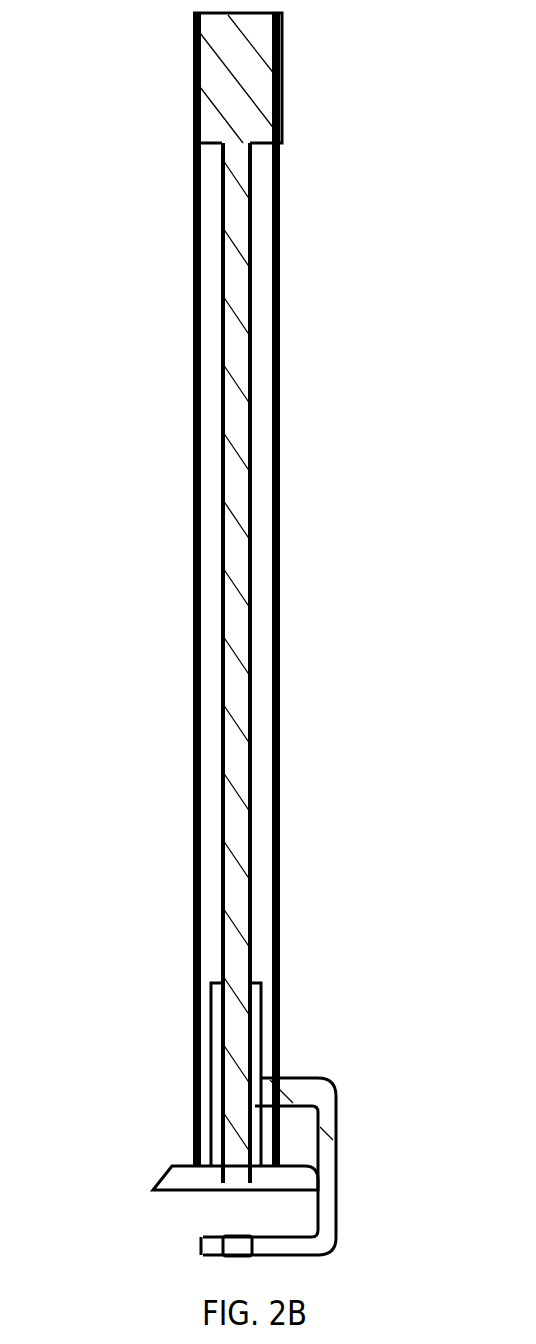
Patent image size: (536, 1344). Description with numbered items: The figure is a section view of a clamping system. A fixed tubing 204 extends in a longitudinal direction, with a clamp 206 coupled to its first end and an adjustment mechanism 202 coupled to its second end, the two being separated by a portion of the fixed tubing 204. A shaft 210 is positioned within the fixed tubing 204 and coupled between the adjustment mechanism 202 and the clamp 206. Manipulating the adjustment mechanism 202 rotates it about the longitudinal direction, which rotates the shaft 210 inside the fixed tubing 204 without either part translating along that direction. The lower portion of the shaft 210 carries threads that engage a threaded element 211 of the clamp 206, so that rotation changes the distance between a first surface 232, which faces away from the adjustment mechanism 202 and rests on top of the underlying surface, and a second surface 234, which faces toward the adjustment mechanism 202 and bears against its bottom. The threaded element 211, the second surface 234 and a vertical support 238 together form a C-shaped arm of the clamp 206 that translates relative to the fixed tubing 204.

The adjustment mechanism 202 is at (272, 77).
The fixed tubing 204 is at (280, 263).
The shaft 210 is at (245, 413).
The clamp 206 is at (319, 1031).
The threaded element 211 is at (193, 1103).
The vertical support 238 is at (330, 1177).
The first surface 232 is at (153, 1187).
The second surface 234 is at (200, 1243).